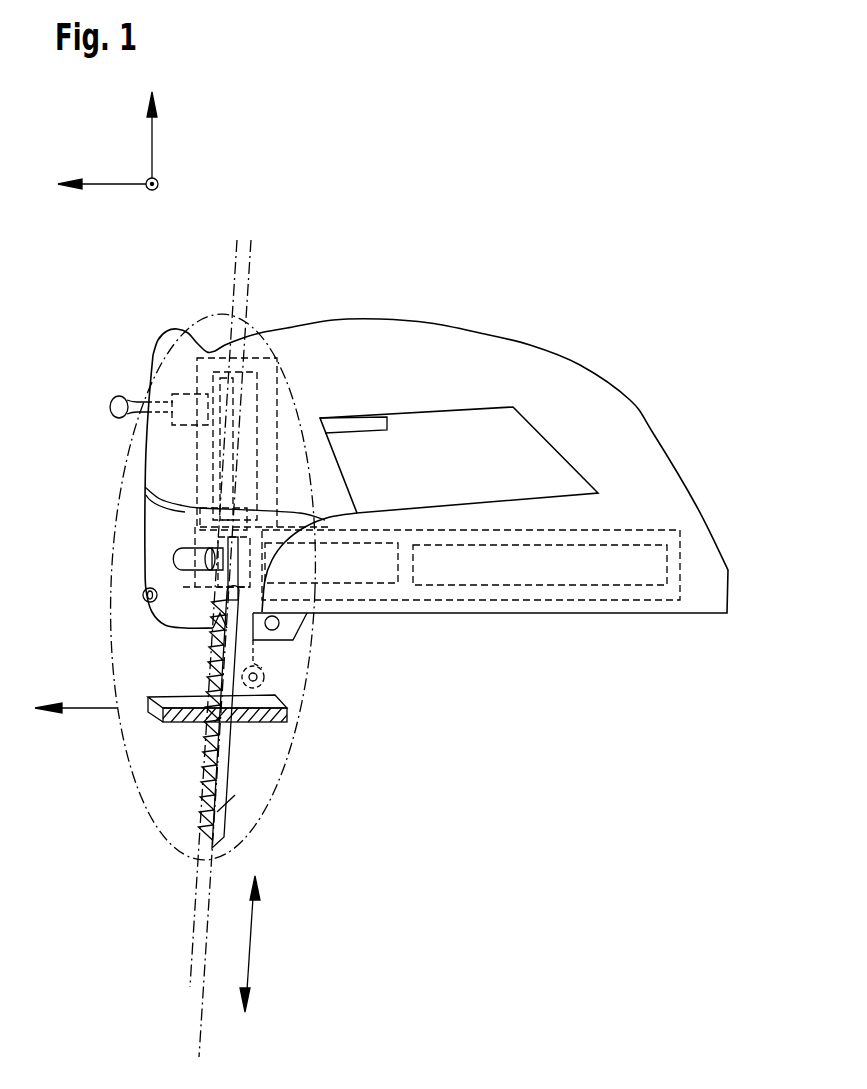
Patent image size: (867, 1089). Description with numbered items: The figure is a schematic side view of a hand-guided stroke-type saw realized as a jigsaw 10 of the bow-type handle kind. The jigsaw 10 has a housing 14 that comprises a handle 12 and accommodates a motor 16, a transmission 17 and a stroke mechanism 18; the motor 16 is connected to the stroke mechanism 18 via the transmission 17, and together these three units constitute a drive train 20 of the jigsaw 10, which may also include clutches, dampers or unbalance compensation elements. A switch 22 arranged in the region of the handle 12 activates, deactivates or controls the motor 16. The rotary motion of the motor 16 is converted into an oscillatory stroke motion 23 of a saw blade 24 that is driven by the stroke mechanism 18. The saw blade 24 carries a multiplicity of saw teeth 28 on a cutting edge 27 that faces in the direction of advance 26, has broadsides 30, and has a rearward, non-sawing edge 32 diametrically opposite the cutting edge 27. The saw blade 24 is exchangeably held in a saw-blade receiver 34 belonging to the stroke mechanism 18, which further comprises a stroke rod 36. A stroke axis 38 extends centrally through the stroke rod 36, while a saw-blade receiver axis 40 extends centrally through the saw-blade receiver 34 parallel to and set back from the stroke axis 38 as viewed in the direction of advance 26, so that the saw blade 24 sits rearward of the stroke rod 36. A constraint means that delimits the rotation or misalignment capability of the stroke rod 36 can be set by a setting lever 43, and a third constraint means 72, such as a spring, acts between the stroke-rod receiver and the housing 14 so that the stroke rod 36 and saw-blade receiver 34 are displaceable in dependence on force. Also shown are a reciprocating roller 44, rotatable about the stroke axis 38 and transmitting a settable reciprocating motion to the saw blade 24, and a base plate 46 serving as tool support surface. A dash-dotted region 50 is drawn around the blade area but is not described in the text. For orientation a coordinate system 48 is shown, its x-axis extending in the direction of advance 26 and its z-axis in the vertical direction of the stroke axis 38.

The jigsaw 10 is at (561, 215).
The handle 12 is at (336, 352).
The housing 14 is at (592, 398).
The motor 16 is at (473, 600).
The transmission 17 is at (397, 583).
The stroke mechanism 18 is at (217, 357).
The drive train 20 is at (677, 533).
The switch 22 is at (368, 427).
The stroke motion 23 is at (253, 943).
The saw blade 24 is at (180, 818).
The direction of advance 26 is at (85, 708).
The cutting edge 27 is at (185, 782).
The saw teeth 28 is at (313, 817).
The broadsides 30 is at (217, 813).
The rearward non-sawing edge 32 is at (277, 814).
The saw-blade receiver 34 is at (172, 573).
The stroke rod 36 is at (262, 350).
The stroke axis 38 is at (188, 978).
The saw-blade receiver axis 40 is at (200, 1042).
The setting lever 43 is at (110, 407).
The reciprocating roller 44 is at (275, 658).
The base plate 46 is at (270, 698).
The coordinate system 48 is at (158, 185).
The pendulum region 50 is at (127, 760).
The third constraint means 72 is at (158, 355).